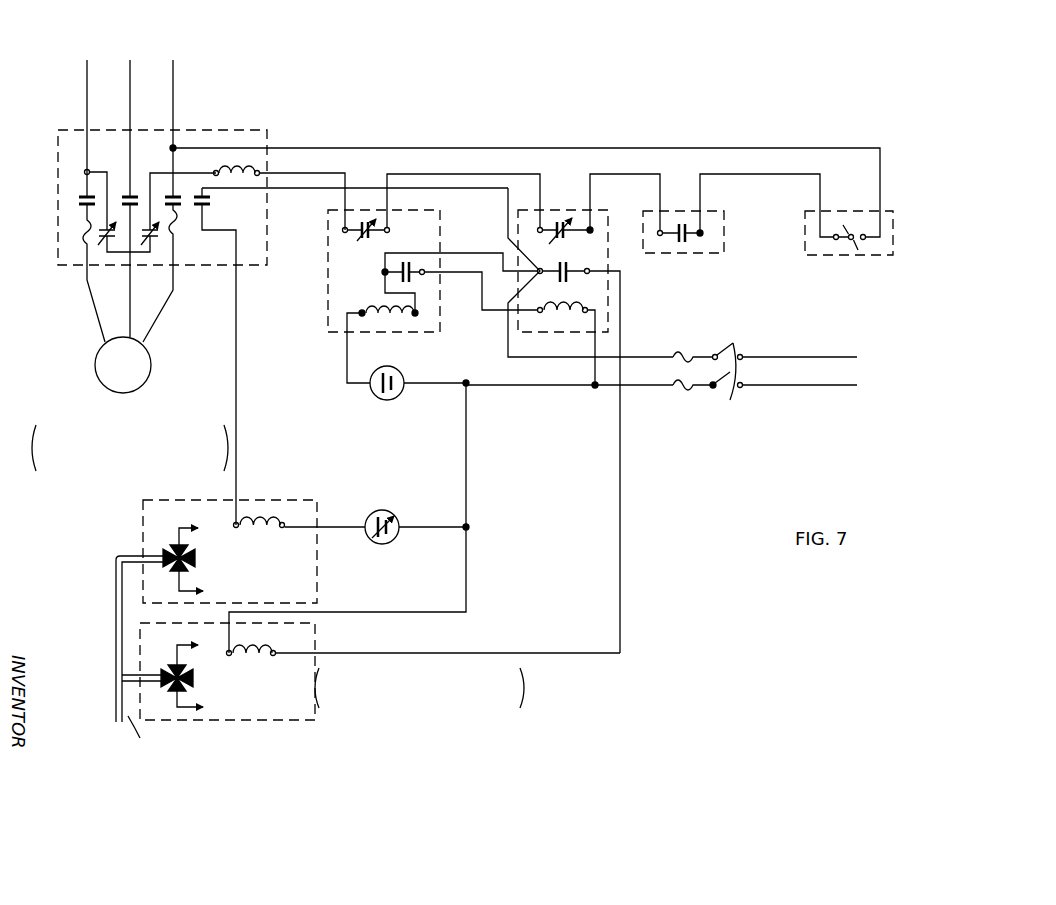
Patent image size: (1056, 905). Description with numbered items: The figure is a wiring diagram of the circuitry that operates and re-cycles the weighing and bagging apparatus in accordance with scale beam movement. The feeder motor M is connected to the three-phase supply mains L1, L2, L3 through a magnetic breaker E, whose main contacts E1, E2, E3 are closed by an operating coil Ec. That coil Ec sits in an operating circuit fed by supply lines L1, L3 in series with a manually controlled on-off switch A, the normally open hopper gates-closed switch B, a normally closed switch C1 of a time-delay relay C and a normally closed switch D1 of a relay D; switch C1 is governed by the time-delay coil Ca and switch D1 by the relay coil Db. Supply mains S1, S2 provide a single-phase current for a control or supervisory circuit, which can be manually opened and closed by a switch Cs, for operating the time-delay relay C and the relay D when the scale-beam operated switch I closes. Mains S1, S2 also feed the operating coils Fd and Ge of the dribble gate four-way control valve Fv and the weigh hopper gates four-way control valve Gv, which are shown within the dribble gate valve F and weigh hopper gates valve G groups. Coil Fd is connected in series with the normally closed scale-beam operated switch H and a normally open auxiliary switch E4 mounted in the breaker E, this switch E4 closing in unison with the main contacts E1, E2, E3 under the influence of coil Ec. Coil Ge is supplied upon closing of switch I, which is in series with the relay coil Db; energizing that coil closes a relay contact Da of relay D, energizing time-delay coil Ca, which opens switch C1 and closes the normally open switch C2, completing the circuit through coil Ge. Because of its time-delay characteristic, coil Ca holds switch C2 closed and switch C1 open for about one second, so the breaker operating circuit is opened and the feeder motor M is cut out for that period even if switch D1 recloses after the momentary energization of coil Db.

The supply main L1 is at (81, 114).
The supply main L2 is at (126, 114).
The supply main L3 is at (170, 114).
The magnetic breaker E is at (238, 143).
The operating coil Ec is at (280, 163).
The main breaker contact E1 is at (76, 205).
The main breaker contact E2 is at (124, 204).
The main breaker contact E3 is at (169, 269).
The auxiliary switch E4 is at (208, 210).
The motor M is at (133, 376).
The relay D is at (430, 318).
The normally closed switch D1 is at (358, 240).
The relay contact Da is at (405, 262).
The relay coil Db is at (374, 309).
The time-delay relay C is at (608, 322).
The normally closed switch C1 is at (556, 222).
The normally open switch C2 is at (574, 264).
The time-delay coil Ca is at (576, 316).
The gates-closed switch B is at (714, 242).
The on-off switch A is at (892, 229).
The scale-beam operated switch I is at (400, 396).
The supply main S1 is at (857, 357).
The supply main S2 is at (857, 385).
The switch Cs is at (727, 385).
The scale-beam operated switch H is at (390, 515).
The dribble gate four-way control valve F is at (160, 508).
The operating coil Fd is at (281, 530).
The dribble gate four-way control valve Fv is at (163, 557).
The weigh hopper gates four-way control valve G is at (371, 691).
The operating coil Ge is at (266, 650).
The weigh hopper gates four-way control valve Gv is at (195, 678).